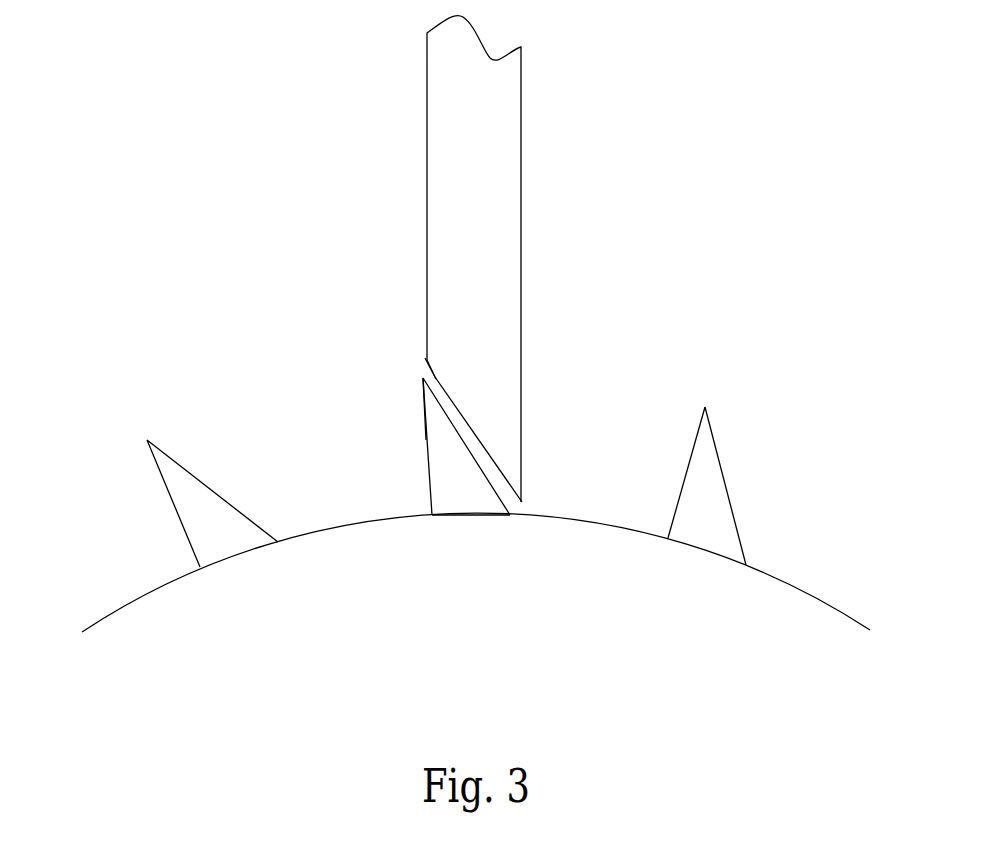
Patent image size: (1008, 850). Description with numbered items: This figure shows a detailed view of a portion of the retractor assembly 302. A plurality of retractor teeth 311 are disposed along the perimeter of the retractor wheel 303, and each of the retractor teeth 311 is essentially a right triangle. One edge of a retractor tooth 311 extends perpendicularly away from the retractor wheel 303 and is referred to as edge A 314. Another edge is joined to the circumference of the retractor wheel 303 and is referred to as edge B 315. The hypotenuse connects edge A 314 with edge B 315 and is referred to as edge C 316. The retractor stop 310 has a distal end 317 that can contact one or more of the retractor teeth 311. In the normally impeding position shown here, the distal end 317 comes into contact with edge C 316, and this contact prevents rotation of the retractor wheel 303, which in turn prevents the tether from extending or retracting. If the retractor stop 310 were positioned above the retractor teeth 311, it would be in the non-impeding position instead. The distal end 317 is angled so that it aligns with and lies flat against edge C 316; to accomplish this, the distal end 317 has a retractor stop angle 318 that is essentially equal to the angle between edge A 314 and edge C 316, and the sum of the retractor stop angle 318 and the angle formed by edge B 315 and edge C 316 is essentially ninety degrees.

The retractor assembly 302 is at (172, 288).
The retractor wheel 303 is at (773, 577).
The retractor stop 310 is at (521, 192).
The retractor teeth 311 is at (426, 460).
The edge A 314 is at (425, 433).
The edge B 315 is at (470, 515).
The edge C 316 is at (433, 383).
The distal end 317 is at (558, 415).
The retractor stop angle 318 is at (490, 455).